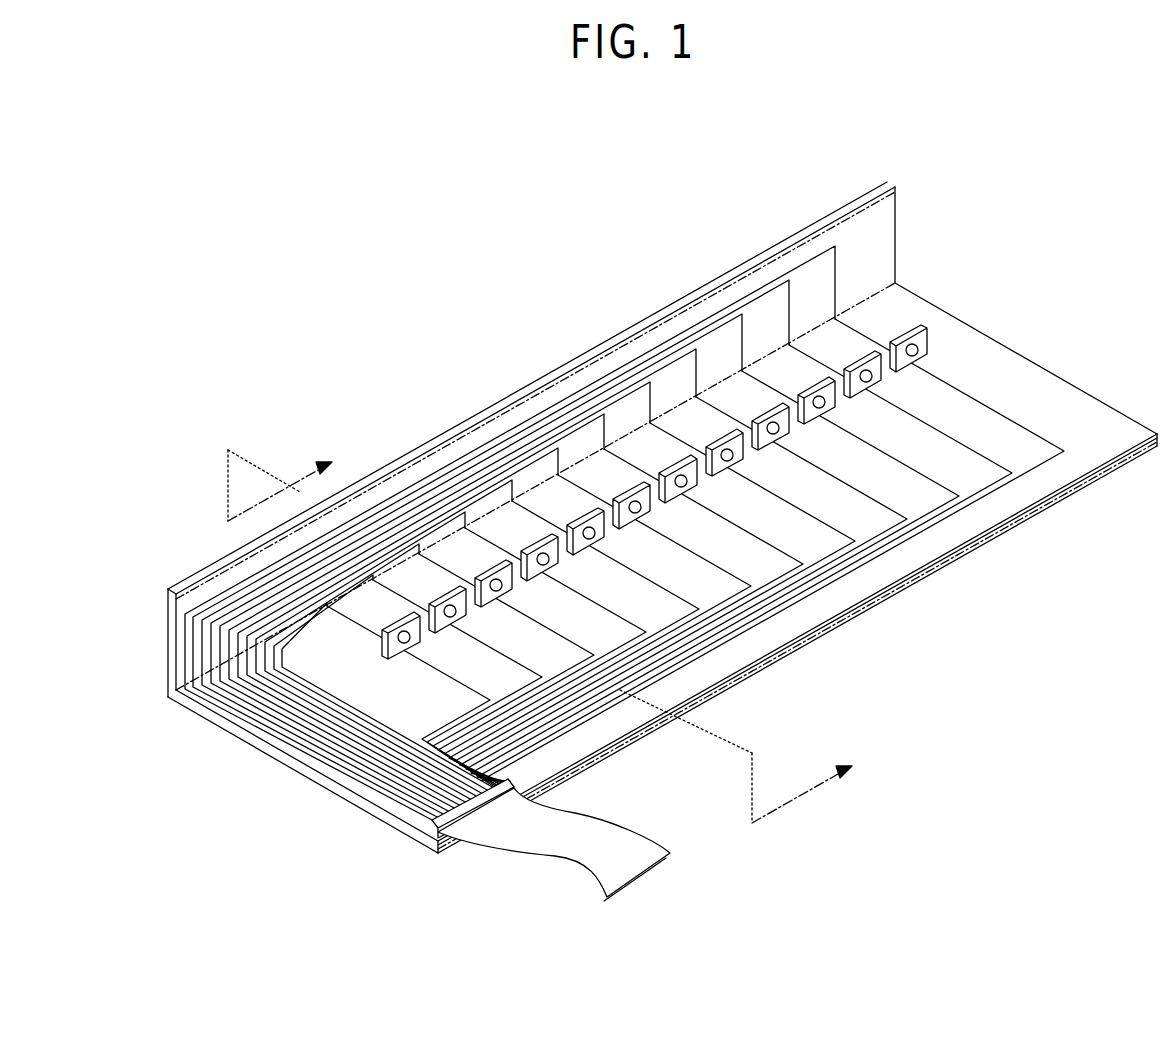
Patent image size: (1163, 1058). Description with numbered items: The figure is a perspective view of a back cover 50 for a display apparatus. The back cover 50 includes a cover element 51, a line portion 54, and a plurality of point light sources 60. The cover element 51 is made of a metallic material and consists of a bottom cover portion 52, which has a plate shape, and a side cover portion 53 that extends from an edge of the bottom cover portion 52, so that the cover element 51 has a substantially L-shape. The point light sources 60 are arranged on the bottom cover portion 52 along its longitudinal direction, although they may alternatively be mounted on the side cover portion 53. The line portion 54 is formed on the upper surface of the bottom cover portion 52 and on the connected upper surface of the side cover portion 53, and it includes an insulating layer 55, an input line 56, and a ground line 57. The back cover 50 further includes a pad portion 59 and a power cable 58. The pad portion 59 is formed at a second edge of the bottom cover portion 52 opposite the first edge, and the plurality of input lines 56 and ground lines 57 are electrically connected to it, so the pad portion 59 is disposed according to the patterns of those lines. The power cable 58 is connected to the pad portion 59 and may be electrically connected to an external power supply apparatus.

The back cover 50 is at (600, 132).
The cover element 51 is at (662, 517).
The bottom cover portion 52 is at (936, 308).
The side cover portion 53 is at (895, 218).
The line portion 54 is at (800, 643).
The insulating layer 55 is at (997, 443).
The input line 56 is at (938, 482).
The ground line 57 is at (880, 563).
The power cable 58 is at (577, 845).
The pad portion 59 is at (436, 830).
The point light sources 60 is at (937, 362).